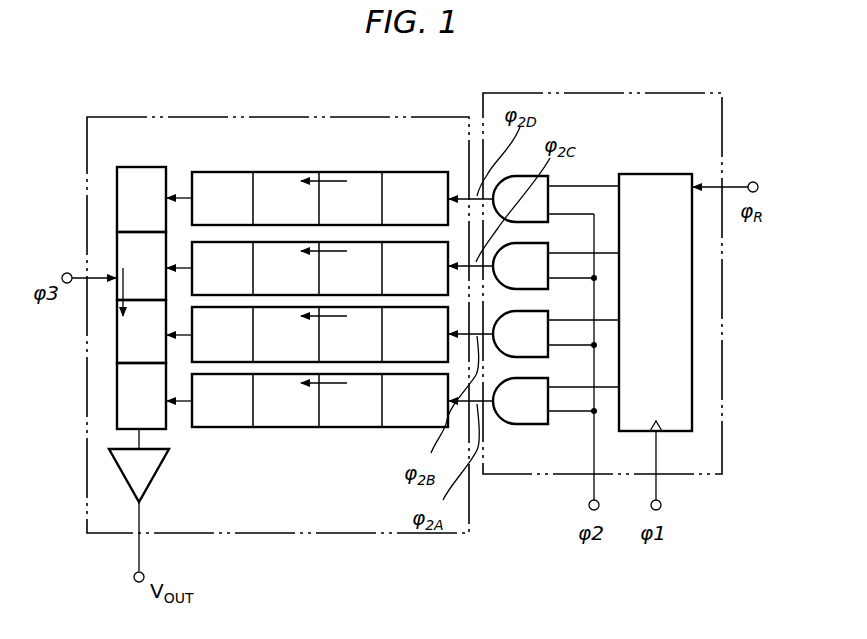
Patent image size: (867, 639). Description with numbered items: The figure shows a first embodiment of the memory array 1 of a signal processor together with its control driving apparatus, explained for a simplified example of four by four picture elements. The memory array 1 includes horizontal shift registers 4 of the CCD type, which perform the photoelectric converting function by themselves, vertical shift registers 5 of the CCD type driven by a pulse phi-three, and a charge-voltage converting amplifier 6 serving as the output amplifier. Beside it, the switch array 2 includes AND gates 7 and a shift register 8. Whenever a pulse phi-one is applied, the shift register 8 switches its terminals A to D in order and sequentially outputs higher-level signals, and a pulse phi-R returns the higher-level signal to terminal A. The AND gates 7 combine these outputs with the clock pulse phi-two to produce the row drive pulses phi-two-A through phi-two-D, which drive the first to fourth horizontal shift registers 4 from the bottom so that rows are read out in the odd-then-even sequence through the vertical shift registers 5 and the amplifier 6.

The memory array 1 is at (240, 117).
The switch array 2 is at (618, 93).
The horizontal shift registers 4 is at (405, 172).
The vertical shift registers 5 is at (138, 167).
The charge-voltage converting amplifier 6 is at (160, 469).
The AND gates 7 is at (528, 425).
The shift register 8 is at (692, 402).